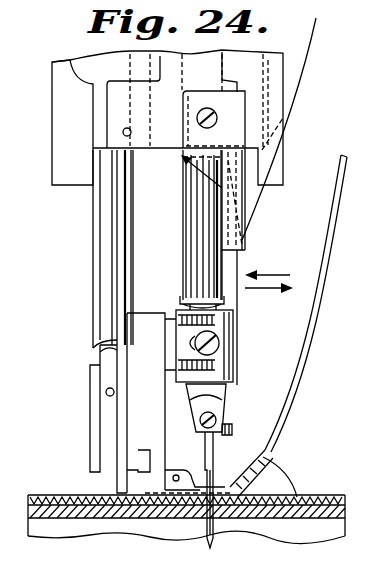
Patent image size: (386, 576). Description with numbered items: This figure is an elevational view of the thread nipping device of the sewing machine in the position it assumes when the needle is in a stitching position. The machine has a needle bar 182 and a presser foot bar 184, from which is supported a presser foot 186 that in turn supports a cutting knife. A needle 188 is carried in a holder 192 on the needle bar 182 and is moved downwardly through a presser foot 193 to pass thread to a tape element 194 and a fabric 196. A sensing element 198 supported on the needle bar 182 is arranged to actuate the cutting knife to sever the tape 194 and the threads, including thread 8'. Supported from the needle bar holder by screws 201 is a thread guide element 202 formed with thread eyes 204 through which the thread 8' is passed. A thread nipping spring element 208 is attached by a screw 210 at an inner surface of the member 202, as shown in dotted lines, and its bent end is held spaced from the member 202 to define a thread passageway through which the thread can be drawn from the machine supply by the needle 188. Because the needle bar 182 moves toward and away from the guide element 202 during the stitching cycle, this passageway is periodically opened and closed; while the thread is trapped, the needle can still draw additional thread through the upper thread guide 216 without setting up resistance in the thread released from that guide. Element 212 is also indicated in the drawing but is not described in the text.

The upper thread guide 216 is at (273, 68).
The screws 201 is at (210, 118).
The thread nipping spring element 208 is at (263, 172).
The screw 210 is at (186, 162).
The presser foot bar 184 is at (120, 227).
The needle bar 182 is at (198, 257).
The thread eyes 204 is at (247, 223).
The thread guide element 202 is at (245, 238).
The lower guide 212 is at (230, 259).
The holder 192 is at (227, 342).
The tape element 194 is at (305, 376).
The thread 8' is at (228, 409).
The presser foot 193 is at (230, 455).
The presser foot 186 is at (168, 462).
The sensing element 198 is at (127, 470).
The needle 188 is at (273, 468).
The fabric 196 is at (338, 468).